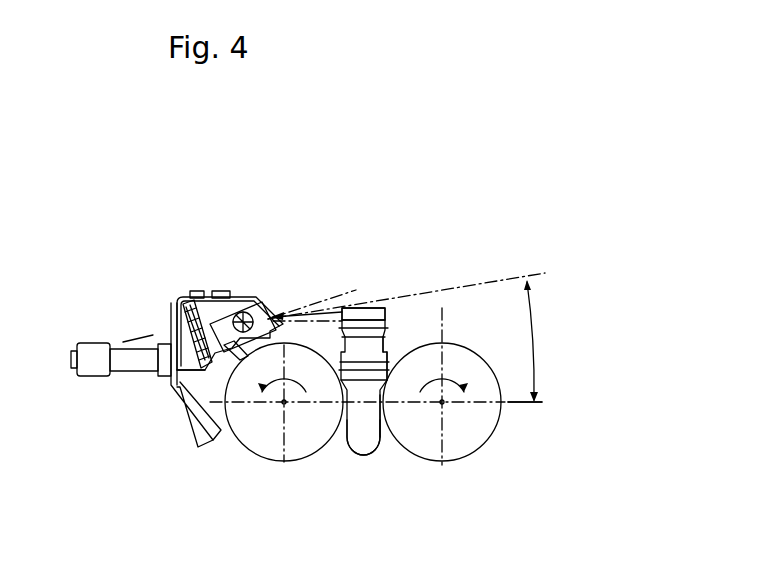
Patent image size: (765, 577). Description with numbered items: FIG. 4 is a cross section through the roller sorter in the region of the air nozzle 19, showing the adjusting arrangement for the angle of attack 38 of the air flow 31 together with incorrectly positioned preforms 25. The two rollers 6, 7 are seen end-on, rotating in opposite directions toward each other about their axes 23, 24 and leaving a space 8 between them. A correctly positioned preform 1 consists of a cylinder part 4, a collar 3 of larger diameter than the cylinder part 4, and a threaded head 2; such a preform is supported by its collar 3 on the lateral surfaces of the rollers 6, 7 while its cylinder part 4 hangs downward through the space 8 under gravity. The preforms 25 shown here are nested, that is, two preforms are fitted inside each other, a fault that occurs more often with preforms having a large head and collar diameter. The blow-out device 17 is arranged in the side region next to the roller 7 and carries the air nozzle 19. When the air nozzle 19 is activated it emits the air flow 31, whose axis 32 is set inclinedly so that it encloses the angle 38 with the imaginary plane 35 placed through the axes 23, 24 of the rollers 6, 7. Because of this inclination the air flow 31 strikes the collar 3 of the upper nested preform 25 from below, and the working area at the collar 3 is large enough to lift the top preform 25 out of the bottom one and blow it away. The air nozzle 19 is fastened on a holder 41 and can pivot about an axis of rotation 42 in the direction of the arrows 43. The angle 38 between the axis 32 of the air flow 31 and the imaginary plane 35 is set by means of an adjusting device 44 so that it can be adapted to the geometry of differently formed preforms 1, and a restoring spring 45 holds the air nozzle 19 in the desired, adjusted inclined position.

The preform 1 is at (345, 440).
The head 2 is at (389, 357).
The collar 3 is at (391, 367).
The cylinder part 4 is at (365, 432).
The roller 6 is at (463, 445).
The roller 7 is at (265, 442).
The space 8 is at (388, 438).
The blow-out device 17 is at (165, 297).
The air nozzle 19 is at (286, 296).
The axis 23 is at (443, 403).
The axis 24 is at (283, 404).
The incorrectly positioned preform 25 is at (376, 307).
The air flow 31 is at (318, 292).
The axis 32 is at (497, 281).
The imaginary plane 35 is at (524, 404).
The angle 38 is at (535, 337).
The holder 41 is at (238, 294).
The axis of rotation 42 is at (260, 296).
The arrows 43 is at (140, 350).
The adjusting device 44 is at (90, 367).
The restoring spring 45 is at (170, 377).